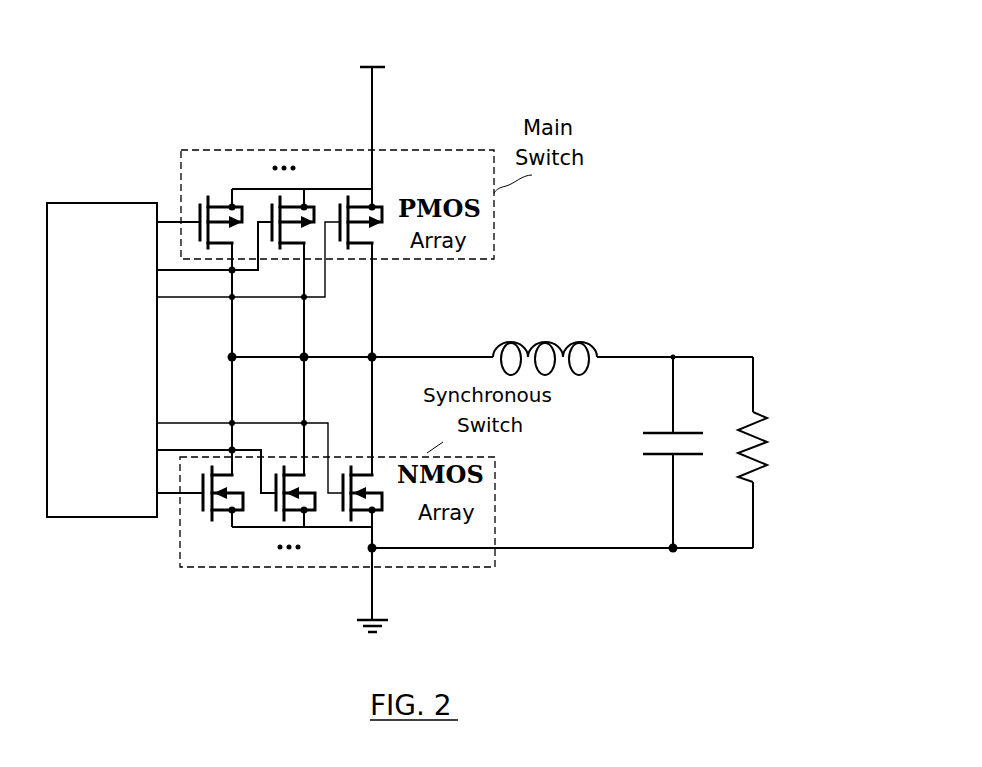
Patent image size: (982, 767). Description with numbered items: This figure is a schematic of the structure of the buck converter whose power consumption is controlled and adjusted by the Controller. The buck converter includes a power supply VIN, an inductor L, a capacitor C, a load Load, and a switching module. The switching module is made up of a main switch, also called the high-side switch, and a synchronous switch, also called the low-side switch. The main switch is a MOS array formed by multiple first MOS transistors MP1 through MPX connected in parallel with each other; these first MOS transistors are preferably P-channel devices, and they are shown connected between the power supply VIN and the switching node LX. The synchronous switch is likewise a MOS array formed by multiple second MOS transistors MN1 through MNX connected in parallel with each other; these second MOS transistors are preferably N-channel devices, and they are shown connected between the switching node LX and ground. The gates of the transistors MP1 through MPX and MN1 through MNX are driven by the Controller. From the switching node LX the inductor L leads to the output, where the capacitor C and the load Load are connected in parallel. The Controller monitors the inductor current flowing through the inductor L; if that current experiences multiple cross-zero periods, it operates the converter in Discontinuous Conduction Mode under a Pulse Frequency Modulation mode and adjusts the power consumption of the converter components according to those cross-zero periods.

The controller Controller is at (102, 360).
The power supply VIN is at (371, 121).
The first MOS transistor MP1 is at (217, 202).
The first MOS transistor MPX is at (347, 202).
The second MOS transistor MN1 is at (228, 512).
The second MOS transistor MNX is at (349, 514).
The switching node LX is at (362, 342).
The inductor L is at (545, 342).
The capacitor C is at (660, 452).
The load Load is at (792, 452).